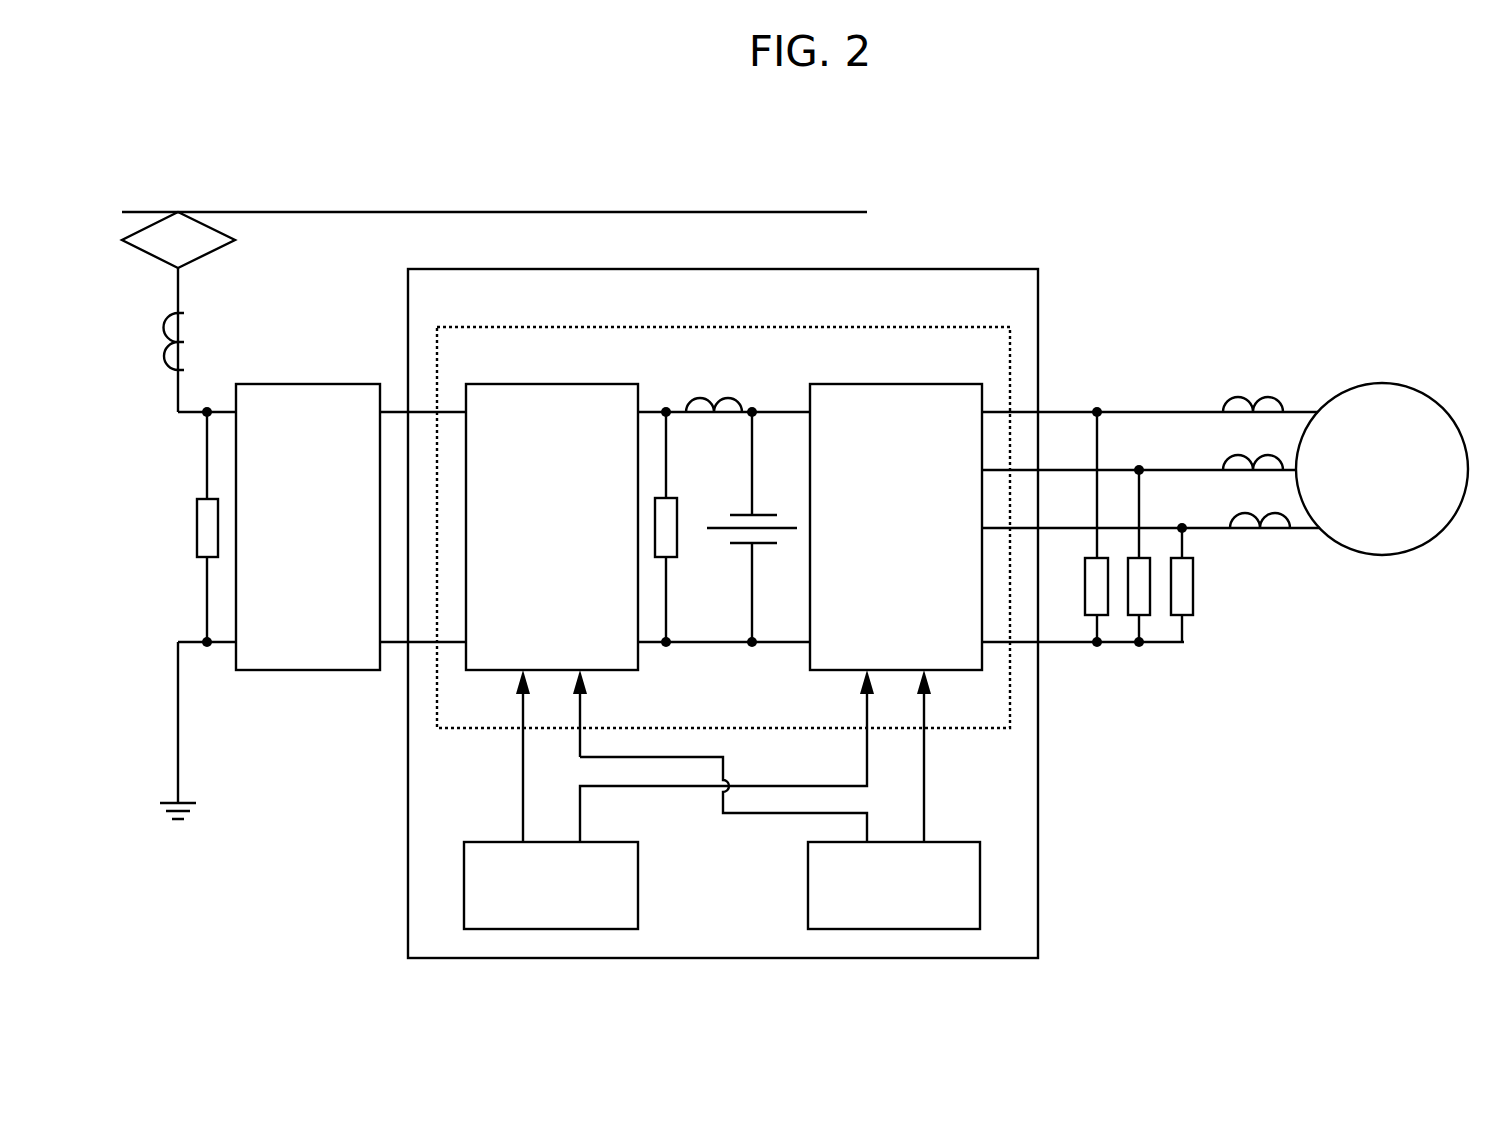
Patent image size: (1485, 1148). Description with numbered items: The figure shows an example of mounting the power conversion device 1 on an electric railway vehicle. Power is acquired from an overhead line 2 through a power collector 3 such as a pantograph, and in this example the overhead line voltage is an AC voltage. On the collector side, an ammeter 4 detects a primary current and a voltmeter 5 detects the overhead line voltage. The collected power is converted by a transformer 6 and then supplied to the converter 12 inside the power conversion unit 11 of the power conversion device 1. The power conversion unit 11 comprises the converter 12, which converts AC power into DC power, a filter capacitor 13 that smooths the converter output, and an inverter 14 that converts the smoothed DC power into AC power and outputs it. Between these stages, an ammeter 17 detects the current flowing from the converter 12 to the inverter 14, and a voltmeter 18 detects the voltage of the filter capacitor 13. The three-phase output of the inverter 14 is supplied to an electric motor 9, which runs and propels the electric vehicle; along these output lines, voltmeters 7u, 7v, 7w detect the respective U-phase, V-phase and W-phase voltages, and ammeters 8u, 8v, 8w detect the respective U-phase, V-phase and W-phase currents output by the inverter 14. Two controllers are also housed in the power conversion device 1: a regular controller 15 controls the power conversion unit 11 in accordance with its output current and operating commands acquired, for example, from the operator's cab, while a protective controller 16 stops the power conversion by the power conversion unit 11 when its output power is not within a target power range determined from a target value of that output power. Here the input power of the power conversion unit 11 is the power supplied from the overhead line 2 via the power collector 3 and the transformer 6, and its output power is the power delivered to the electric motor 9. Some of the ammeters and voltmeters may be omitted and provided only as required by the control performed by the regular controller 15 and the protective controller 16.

The power conversion device 1 is at (903, 269).
The overhead line 2 is at (628, 212).
The power collector 3 is at (140, 250).
The ammeter 4 is at (168, 352).
The voltmeter 5 is at (194, 503).
The transformer 6 is at (297, 384).
The voltmeter 7u is at (1112, 558).
The voltmeter 7v is at (1128, 617).
The voltmeter 7w is at (1193, 615).
The ammeter 8u is at (1245, 400).
The ammeter 8v is at (1250, 458).
The ammeter 8w is at (1282, 527).
The electric motor 9 is at (1372, 383).
The power conversion unit 11 is at (470, 327).
The converter 12 is at (560, 384).
The filter capacitor 13 is at (768, 515).
The inverter 14 is at (890, 384).
The regular controller 15 is at (612, 842).
The protective controller 16 is at (956, 842).
The ammeter 17 is at (730, 400).
The voltmeter 18 is at (680, 540).